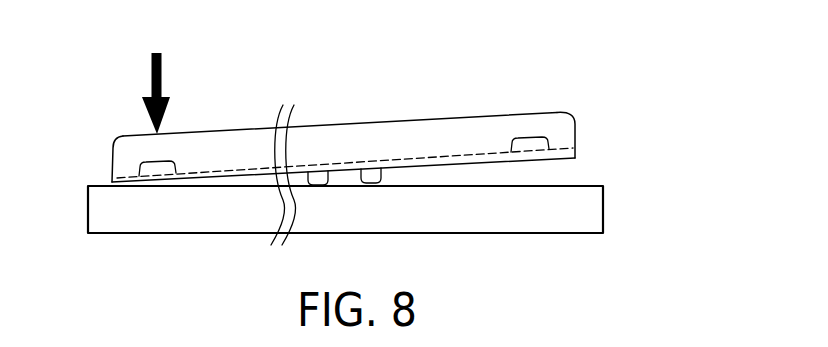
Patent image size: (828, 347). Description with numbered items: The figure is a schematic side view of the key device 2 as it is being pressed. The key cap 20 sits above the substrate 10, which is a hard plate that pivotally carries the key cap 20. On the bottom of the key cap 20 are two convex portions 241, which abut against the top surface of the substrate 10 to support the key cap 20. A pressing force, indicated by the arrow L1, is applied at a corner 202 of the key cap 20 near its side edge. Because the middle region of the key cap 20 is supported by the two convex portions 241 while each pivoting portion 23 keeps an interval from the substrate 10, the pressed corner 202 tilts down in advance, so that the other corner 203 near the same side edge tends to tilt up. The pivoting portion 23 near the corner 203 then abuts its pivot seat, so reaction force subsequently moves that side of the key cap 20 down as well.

The key device 2 is at (622, 95).
The substrate 10 is at (603, 209).
The key cap 20 is at (369, 113).
The corner 202 is at (130, 136).
The corner 203 is at (555, 110).
The pivoting portion 23 is at (167, 160).
The convex portion 241 is at (318, 185).
The arrow L1 is at (151, 62).